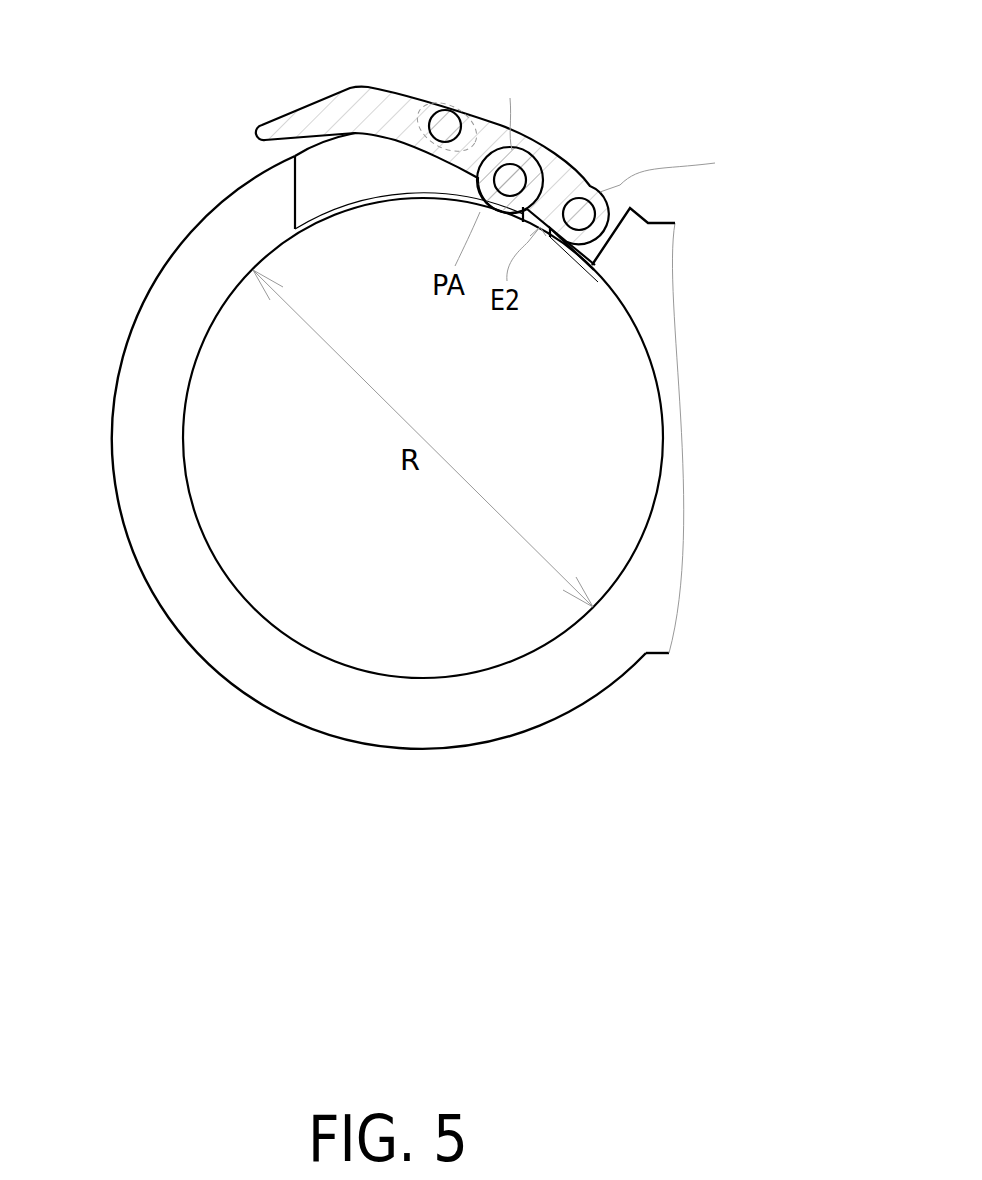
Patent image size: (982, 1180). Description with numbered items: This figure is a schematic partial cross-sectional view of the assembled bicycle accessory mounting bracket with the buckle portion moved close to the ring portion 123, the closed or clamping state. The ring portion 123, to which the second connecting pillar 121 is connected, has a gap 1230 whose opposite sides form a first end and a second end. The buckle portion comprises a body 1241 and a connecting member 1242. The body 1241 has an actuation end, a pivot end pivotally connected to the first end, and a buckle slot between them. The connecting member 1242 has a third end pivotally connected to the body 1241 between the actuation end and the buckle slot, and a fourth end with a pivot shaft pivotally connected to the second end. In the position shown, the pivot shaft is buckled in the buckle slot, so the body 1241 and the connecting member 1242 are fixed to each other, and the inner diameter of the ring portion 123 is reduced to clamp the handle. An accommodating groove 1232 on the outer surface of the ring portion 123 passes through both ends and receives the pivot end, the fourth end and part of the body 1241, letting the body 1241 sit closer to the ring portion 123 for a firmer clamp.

The ring portion 123 is at (170, 297).
The second connecting pillar 121 is at (657, 250).
The gap 1230 is at (540, 245).
The accommodating groove 1232 is at (326, 160).
The body 1241 is at (297, 124).
The connecting member 1242 is at (418, 105).